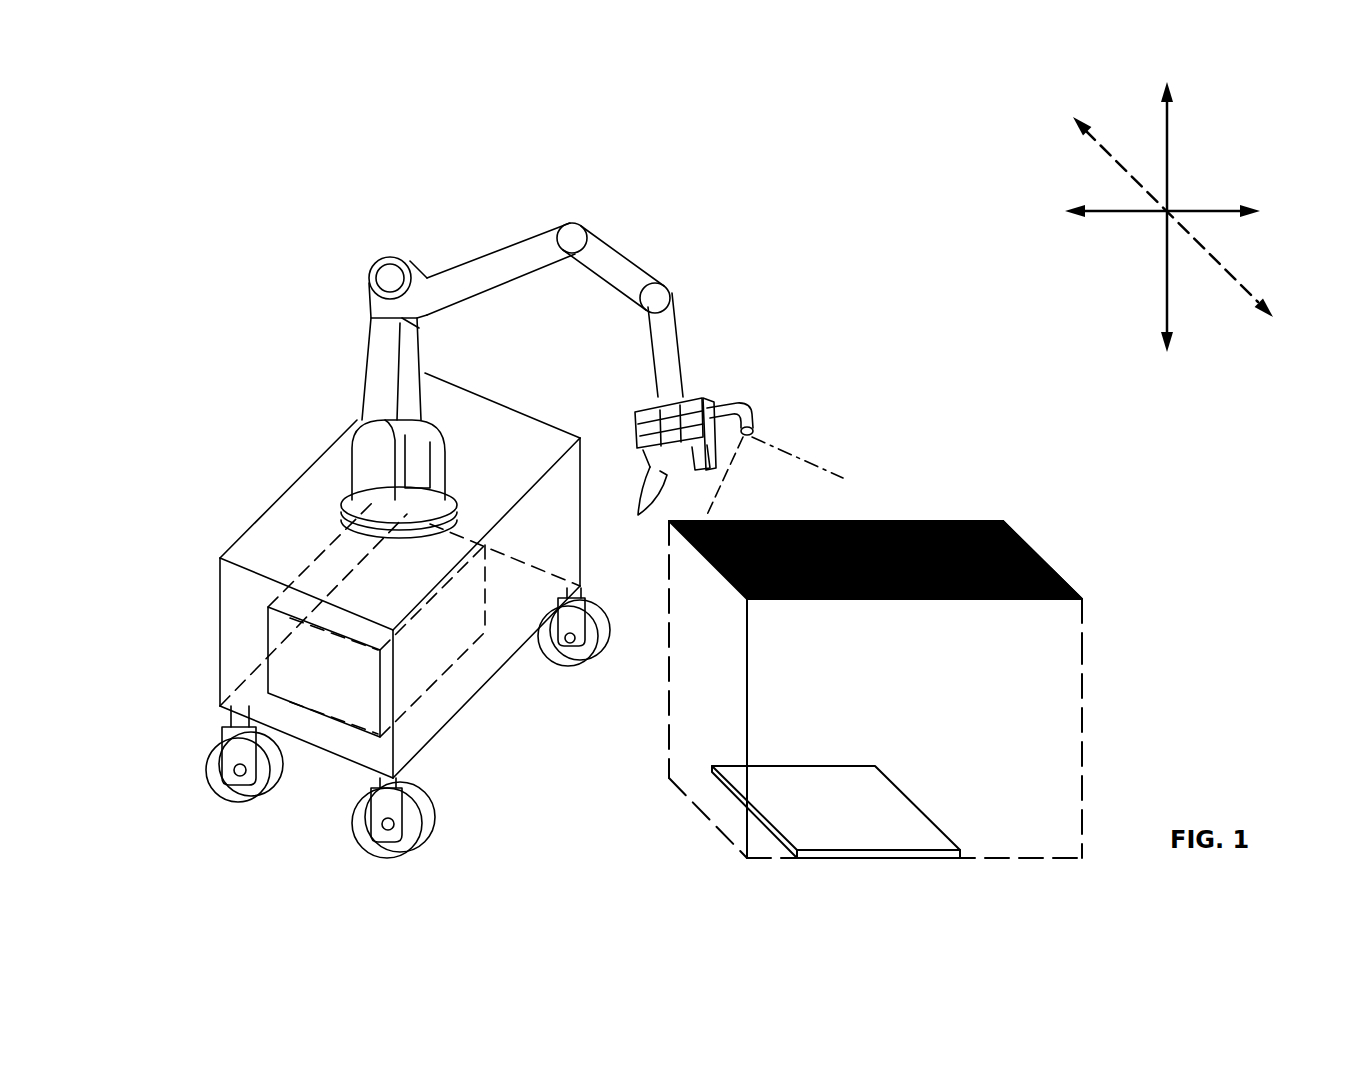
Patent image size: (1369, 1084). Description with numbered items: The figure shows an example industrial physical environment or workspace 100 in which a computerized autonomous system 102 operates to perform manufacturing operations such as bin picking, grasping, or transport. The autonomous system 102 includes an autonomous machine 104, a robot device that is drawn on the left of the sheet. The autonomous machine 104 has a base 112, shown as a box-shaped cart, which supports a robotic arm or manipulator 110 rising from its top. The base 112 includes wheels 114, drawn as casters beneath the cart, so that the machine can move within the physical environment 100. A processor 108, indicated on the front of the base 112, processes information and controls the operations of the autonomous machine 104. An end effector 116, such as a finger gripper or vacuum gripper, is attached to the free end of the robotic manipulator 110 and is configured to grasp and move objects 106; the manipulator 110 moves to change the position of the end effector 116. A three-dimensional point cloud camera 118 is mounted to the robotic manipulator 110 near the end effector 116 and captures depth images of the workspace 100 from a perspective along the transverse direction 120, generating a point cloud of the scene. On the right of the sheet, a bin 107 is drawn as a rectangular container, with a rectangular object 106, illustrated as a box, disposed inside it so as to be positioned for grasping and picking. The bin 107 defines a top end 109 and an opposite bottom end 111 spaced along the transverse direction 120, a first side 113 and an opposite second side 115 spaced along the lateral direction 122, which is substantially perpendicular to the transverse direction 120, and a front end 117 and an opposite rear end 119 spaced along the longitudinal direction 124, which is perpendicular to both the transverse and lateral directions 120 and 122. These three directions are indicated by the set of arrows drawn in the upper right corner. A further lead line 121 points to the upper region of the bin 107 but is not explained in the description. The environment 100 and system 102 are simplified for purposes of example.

The physical environment or workspace 100 is at (844, 278).
The autonomous system 102 is at (531, 165).
The autonomous machine 104 is at (459, 256).
The object 106 is at (853, 756).
The bin 107 is at (1084, 577).
The processor 108 is at (268, 632).
The top end 109 is at (1022, 536).
The robotic manipulator 110 is at (643, 272).
The bottom end 111 is at (775, 860).
The base 112 is at (300, 507).
The first side 113 is at (690, 678).
The wheels 114 is at (416, 850).
The second side 115 is at (1090, 728).
The end effector 116 is at (642, 508).
The front end 117 is at (1040, 828).
The 3D point cloud camera 118 is at (747, 415).
The rear end 119 is at (988, 521).
The transverse direction 120 is at (1167, 203).
The top opening 121 is at (953, 520).
The lateral direction 122 is at (1186, 213).
The longitudinal direction 124 is at (1195, 230).